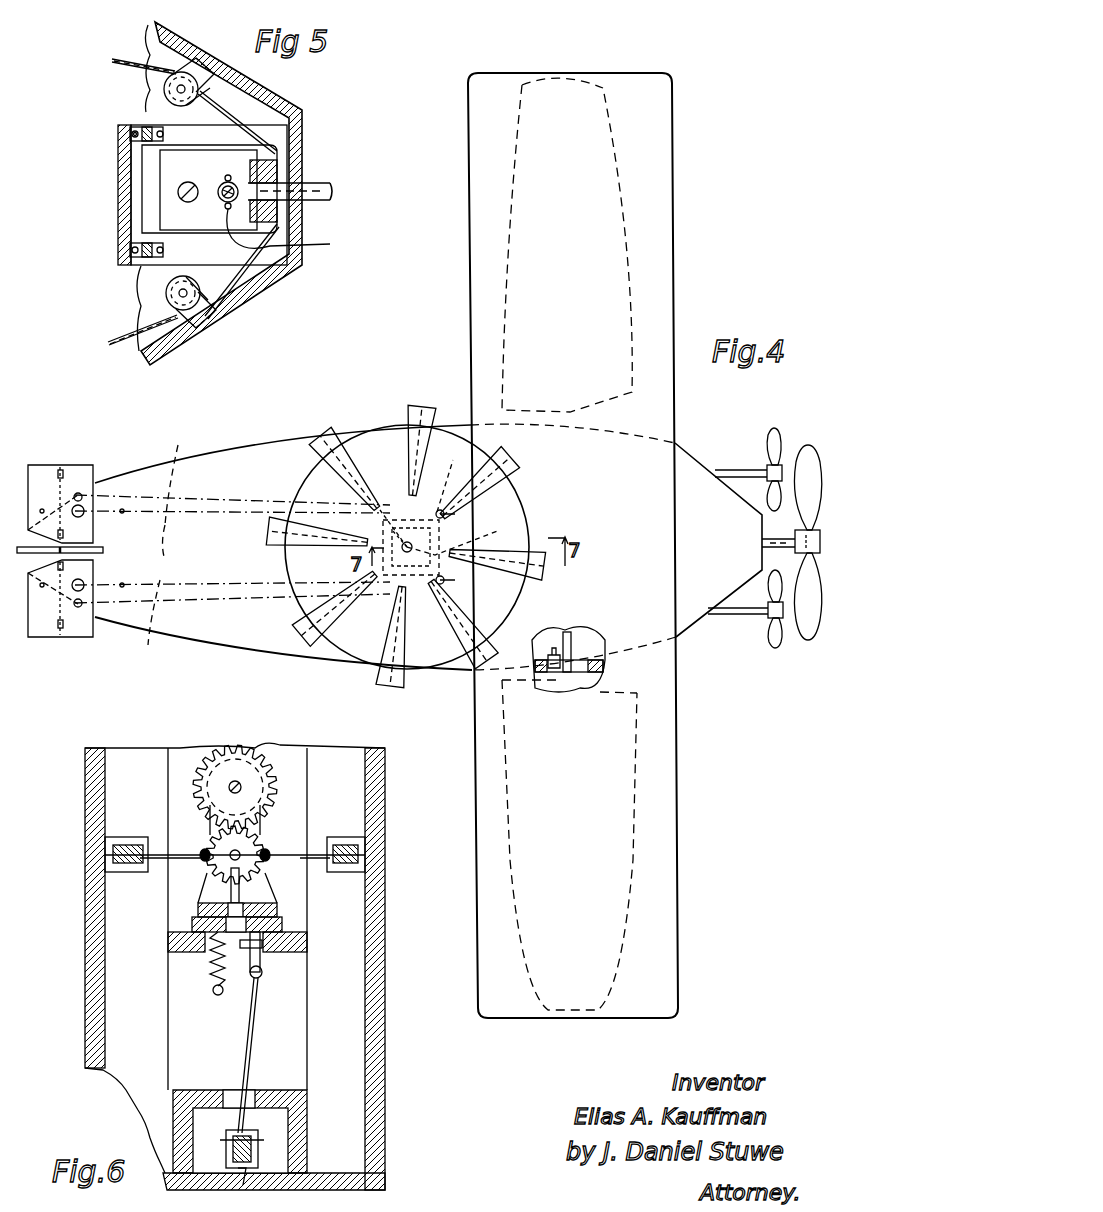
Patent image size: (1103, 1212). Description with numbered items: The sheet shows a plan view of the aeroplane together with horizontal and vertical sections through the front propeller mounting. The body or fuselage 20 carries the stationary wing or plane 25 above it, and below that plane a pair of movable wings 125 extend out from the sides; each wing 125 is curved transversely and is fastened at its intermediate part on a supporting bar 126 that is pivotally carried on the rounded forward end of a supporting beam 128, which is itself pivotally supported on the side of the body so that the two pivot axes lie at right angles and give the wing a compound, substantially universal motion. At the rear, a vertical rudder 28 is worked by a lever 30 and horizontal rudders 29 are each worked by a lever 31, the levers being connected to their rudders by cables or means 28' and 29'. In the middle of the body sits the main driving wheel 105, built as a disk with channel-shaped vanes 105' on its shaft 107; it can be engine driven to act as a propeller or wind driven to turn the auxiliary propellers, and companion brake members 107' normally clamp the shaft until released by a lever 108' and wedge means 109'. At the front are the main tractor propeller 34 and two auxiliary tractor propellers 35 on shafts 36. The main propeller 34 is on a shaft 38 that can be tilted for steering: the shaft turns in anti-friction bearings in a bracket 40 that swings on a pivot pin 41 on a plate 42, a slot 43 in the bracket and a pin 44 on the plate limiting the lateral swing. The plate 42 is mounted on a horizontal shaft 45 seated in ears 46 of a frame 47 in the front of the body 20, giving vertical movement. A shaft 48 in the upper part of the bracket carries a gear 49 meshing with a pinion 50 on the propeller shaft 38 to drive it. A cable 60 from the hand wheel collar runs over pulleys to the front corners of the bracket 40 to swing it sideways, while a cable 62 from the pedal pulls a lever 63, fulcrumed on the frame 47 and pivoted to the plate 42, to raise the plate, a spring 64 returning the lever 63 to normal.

In FIG. 5, the body or fuselage 20 is at (266, 282).
In FIG. 4, the body or fuselage 20 is at (262, 652).
In FIG. 6, the body or fuselage 20 is at (385, 1060).
In FIG. 4, the stationary wing or plane 25 is at (676, 743).
In FIG. 4, the vertical rudder 28 is at (53, 519).
In FIG. 4, the cables or means 28' is at (232, 544).
In FIG. 4, the horizontal rudders 29 is at (60, 546).
In FIG. 4, the cables or means 29' is at (215, 548).
In FIG. 4, the lever 30 is at (428, 566).
In FIG. 4, the lever 31 is at (462, 508).
In FIG. 4, the main tractor propeller 34 is at (806, 448).
In FIG. 4, the auxiliary tractor propellers 35 is at (772, 430).
In FIG. 4, the shafts 36 is at (722, 469).
In FIG. 5, the propeller shaft 38 is at (318, 188).
In FIG. 4, the propeller shaft 38 is at (790, 532).
In FIG. 6, the propeller shaft 38 is at (232, 858).
In FIG. 5, the bracket 40 is at (202, 158).
In FIG. 6, the bracket 40 is at (265, 880).
In FIG. 5, the pivot pin 41 is at (178, 194).
In FIG. 6, the pivot pin 41 is at (243, 905).
In FIG. 5, the plate 42 is at (146, 178).
In FIG. 6, the plate 42 is at (282, 922).
In FIG. 5, the slot 43 is at (238, 168).
In FIG. 5, the pin 44 is at (290, 231).
In FIG. 5, the horizontal shaft 45 is at (147, 126).
In FIG. 5, the ears 46 is at (132, 136).
In FIG. 5, the frame 47 is at (142, 128).
In FIG. 6, the shaft 48 is at (229, 787).
In FIG. 6, the gear 49 is at (268, 780).
In FIG. 6, the pinion 50 is at (248, 848).
In FIG. 5, the cable 60 is at (112, 58).
In FIG. 6, the cable 60 is at (188, 850).
In FIG. 6, the cable 62 is at (252, 1045).
In FIG. 6, the lever 63 is at (262, 968).
In FIG. 6, the spring 64 is at (210, 970).
In FIG. 4, the main driving wheel 105 is at (407, 561).
In FIG. 4, the channel-shaped vanes 105' is at (424, 564).
In FIG. 4, the shaft 107 is at (388, 502).
In FIG. 4, the brake members 107' is at (376, 530).
In FIG. 4, the lever 108' is at (467, 535).
In FIG. 4, the wedge means 109' is at (456, 482).
In FIG. 4, the wings 125 is at (632, 262).
In FIG. 4, the supporting bar 126 is at (572, 642).
In FIG. 4, the supporting beam 128 is at (548, 655).